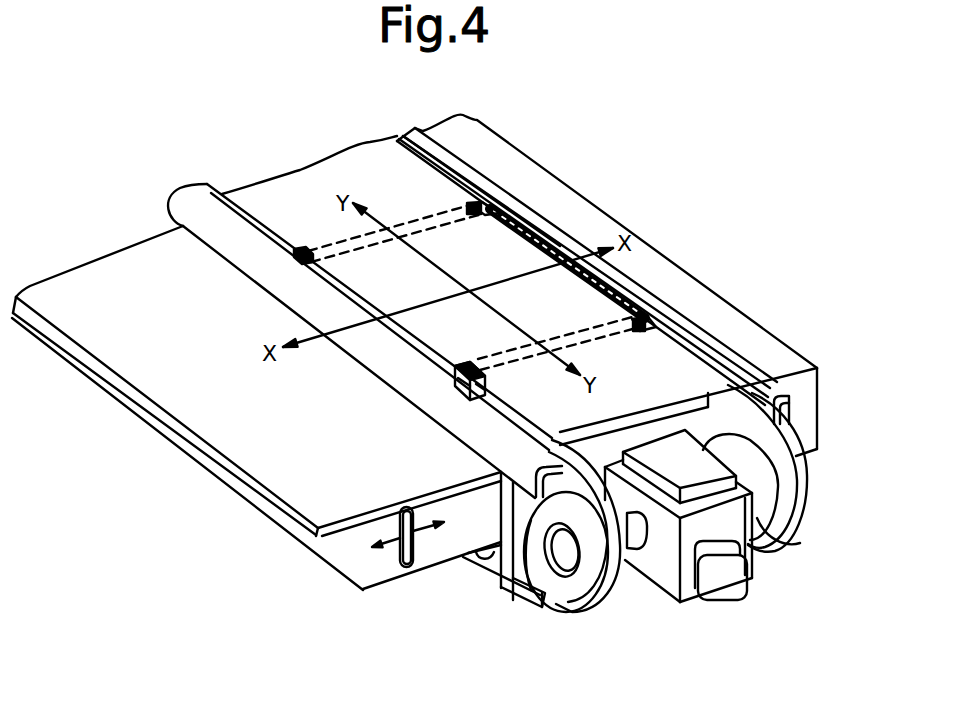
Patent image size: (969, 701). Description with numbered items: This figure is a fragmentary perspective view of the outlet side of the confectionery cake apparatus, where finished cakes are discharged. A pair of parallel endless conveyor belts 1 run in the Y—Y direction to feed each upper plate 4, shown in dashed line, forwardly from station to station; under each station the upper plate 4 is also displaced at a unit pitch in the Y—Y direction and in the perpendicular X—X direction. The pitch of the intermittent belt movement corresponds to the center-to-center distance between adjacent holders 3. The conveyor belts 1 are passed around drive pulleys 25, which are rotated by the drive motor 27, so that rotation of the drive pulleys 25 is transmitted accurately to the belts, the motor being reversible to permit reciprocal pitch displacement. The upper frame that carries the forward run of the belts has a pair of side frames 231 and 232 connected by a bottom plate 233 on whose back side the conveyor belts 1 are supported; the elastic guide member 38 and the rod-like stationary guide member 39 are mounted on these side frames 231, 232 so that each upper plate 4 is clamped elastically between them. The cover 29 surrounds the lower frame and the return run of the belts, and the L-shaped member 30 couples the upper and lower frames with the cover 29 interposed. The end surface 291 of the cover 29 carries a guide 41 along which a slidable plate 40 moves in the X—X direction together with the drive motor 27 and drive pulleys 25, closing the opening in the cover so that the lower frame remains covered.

The endless conveyor belt 1 is at (805, 508).
The holder 3 is at (654, 320).
The upper plate 4 is at (495, 250).
The drive pulley 25 is at (767, 517).
The drive motor 27 is at (712, 487).
The cover 29 is at (523, 173).
The L-shaped member 30 is at (522, 587).
The elastic guide member 38 is at (516, 579).
The stationary guide member 39 is at (789, 410).
The slidable plate 40 is at (450, 540).
The guide 41 is at (400, 555).
The side frame 231 is at (217, 247).
The side frame 232 is at (565, 240).
The bottom plate 233 is at (705, 365).
The end surface of cover 291 is at (357, 557).